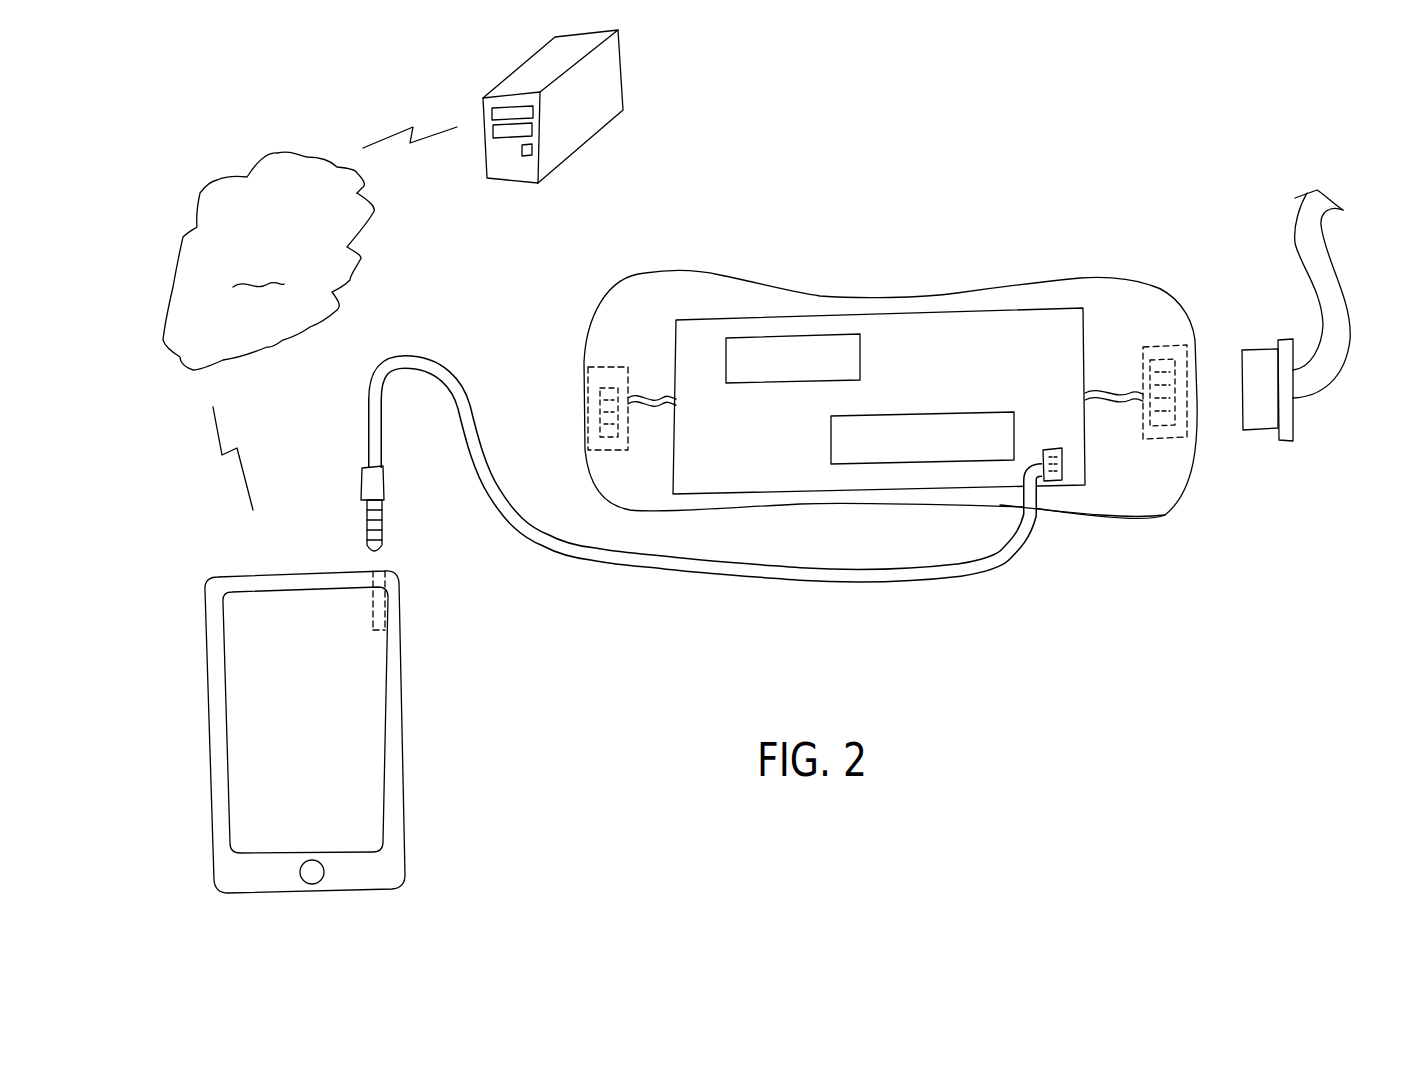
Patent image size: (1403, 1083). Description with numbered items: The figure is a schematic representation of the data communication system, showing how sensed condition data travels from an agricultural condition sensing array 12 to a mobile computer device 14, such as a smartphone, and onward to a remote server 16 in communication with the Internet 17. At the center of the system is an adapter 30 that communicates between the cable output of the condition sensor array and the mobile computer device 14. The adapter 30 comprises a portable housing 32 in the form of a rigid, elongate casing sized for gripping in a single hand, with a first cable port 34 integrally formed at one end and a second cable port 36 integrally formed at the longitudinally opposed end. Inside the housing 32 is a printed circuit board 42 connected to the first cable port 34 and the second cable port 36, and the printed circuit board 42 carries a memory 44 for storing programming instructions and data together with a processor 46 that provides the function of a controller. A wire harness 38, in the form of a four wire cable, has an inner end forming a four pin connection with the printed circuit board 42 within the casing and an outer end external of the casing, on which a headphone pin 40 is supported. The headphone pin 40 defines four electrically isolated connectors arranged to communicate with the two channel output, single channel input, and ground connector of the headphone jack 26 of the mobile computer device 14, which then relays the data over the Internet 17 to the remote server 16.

The agricultural condition sensing array 12 is at (1268, 491).
The mobile computer device 14 is at (405, 730).
The remote server 16 is at (616, 88).
The Internet 17 is at (268, 261).
The headphone jack 26 is at (390, 580).
The adapter 30 is at (913, 270).
The portable housing 32 is at (1067, 513).
The first cable port 34 is at (1165, 343).
The second cable port 36 is at (608, 364).
The wire harness 38 is at (413, 362).
The headphone pin 40 is at (384, 510).
The printed circuit board 42 is at (1044, 311).
The memory 44 is at (757, 380).
The processor 46 is at (955, 412).